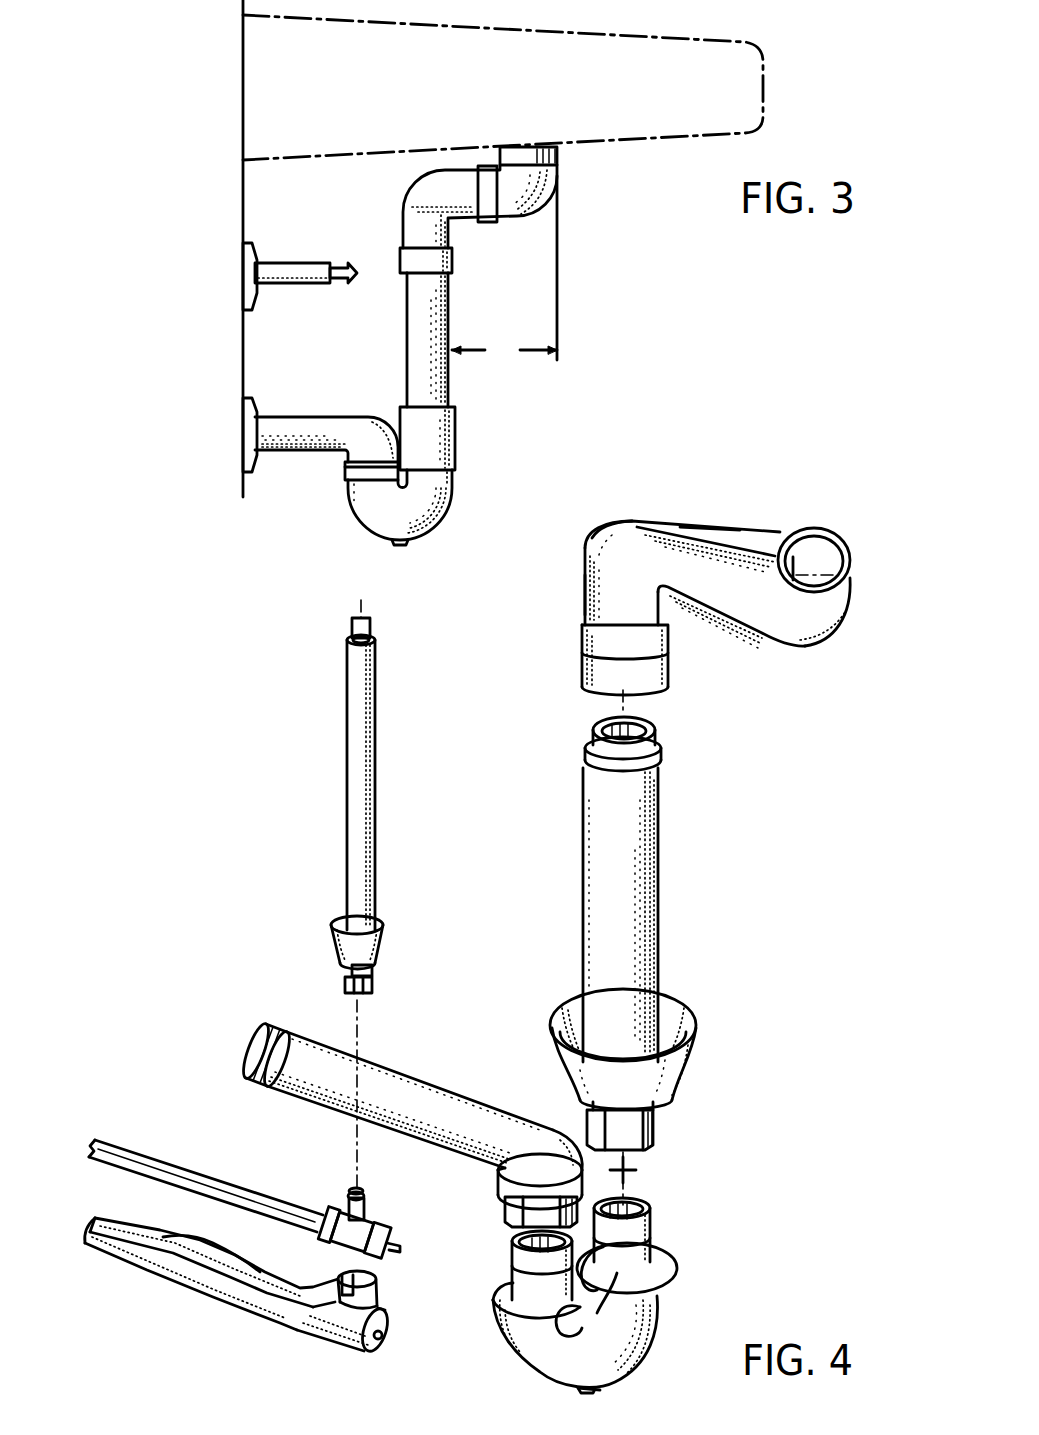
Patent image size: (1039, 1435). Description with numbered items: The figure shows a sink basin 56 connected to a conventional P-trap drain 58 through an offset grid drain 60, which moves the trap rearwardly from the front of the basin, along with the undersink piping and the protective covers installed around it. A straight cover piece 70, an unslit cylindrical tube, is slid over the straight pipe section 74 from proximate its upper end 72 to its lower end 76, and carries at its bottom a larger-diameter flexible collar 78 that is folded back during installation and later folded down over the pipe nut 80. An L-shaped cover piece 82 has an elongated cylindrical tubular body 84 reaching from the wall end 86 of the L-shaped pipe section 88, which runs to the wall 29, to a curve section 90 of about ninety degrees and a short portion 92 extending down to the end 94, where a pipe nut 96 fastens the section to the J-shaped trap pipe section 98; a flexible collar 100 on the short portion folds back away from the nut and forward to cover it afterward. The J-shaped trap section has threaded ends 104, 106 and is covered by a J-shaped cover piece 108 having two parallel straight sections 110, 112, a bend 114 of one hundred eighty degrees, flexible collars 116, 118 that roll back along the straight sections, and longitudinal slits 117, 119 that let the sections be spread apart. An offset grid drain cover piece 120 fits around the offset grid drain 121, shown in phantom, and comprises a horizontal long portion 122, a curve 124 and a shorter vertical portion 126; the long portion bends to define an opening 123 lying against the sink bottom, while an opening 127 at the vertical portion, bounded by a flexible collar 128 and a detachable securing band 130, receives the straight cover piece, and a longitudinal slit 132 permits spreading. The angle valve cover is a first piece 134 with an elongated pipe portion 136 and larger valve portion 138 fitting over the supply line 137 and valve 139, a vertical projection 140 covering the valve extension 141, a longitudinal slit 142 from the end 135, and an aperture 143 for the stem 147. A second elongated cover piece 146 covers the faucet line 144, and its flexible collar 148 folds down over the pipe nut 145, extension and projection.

In FIG. 3, the wall 29 is at (243, 194).
In FIG. 3, the basin 56 is at (535, 75).
In FIG. 3, the P-trap drain 58 is at (490, 290).
In FIG. 3, the offset grid drain 60 is at (559, 192).
In FIG. 3, the straight cover piece 70 is at (407, 345).
In FIG. 4, the straight cover piece 70 is at (594, 902).
In FIG. 4, the upper end of pipe 72 is at (657, 727).
In FIG. 4, the straight pipe section 74 is at (582, 731).
In FIG. 4, the lower end of pipe 76 is at (657, 1135).
In FIG. 3, the flexible collar 78 is at (455, 438).
In FIG. 4, the flexible collar 78 is at (690, 1030).
In FIG. 4, the pipe nut 80 is at (655, 1115).
In FIG. 3, the L-shaped cover piece 82 is at (330, 408).
In FIG. 4, the L-shaped cover piece 82 is at (414, 1150).
In FIG. 3, the elongated cylindrical tubular body 84 is at (284, 452).
In FIG. 4, the elongated cylindrical tubular body 84 is at (395, 1085).
In FIG. 4, the wall end 86 is at (240, 1050).
In FIG. 4, the L-shaped pipe section 88 is at (245, 1075).
In FIG. 4, the curve section 90 is at (535, 1140).
In FIG. 4, the short portion 92 is at (505, 1180).
In FIG. 4, the end of L-shaped pipe section 94 is at (510, 1217).
In FIG. 4, the pipe nut 96 is at (512, 1237).
In FIG. 4, the J-shaped trap pipe section 98 is at (662, 1236).
In FIG. 3, the flexible collar 100 is at (347, 470).
In FIG. 4, the flexible collar 100 is at (630, 1170).
In FIG. 4, the threaded end 104 is at (655, 1210).
In FIG. 4, the threaded end 106 is at (513, 1255).
In FIG. 3, the J-shaped cover piece 108 is at (385, 520).
In FIG. 4, the J-shaped cover piece 108 is at (555, 1368).
In FIG. 4, the straight section 110 is at (678, 1265).
In FIG. 4, the straight section 112 is at (513, 1275).
In FIG. 4, the bend 114 is at (620, 1380).
In FIG. 4, the flexible collar 116 is at (660, 1298).
In FIG. 4, the longitudinal slit 117 is at (612, 1313).
In FIG. 4, the flexible collar 118 is at (500, 1303).
In FIG. 4, the longitudinal slit 119 is at (533, 1340).
In FIG. 3, the offset grid drain cover piece 120 is at (403, 205).
In FIG. 4, the offset grid drain cover piece 120 is at (767, 650).
In FIG. 4, the offset grid drain 121 is at (834, 532).
In FIG. 4, the horizontal long portion 122 is at (697, 528).
In FIG. 4, the opening 123 is at (845, 592).
In FIG. 4, the curve 124 is at (597, 560).
In FIG. 4, the shorter vertical portion 126 is at (585, 592).
In FIG. 4, the opening 127 is at (590, 690).
In FIG. 3, the flexible collar 128 is at (403, 256).
In FIG. 4, the flexible collar 128 is at (583, 627).
In FIG. 4, the detachable securing band 130 is at (590, 660).
In FIG. 4, the longitudinal slit 132 is at (667, 525).
In FIG. 3, the first piece 134 is at (286, 284).
In FIG. 4, the first piece 134 is at (225, 1298).
In FIG. 4, the end 135 is at (95, 1222).
In FIG. 4, the elongated pipe portion 136 is at (177, 1276).
In FIG. 3, the supply line 137 is at (346, 283).
In FIG. 4, the supply line 137 is at (170, 1165).
In FIG. 4, the valve portion 138 is at (327, 1330).
In FIG. 4, the valve 139 is at (346, 1216).
In FIG. 4, the vertical projection 140 is at (378, 1293).
In FIG. 4, the vertical extension 141 is at (356, 1187).
In FIG. 4, the longitudinal slit 142 is at (197, 1245).
In FIG. 4, the aperture 143 is at (385, 1337).
In FIG. 4, the faucet line 144 is at (372, 970).
In FIG. 4, the pipe nut 145 is at (372, 990).
In FIG. 4, the second elongated cover piece 146 is at (373, 790).
In FIG. 4, the stem 147 is at (400, 1242).
In FIG. 4, the flexible collar 148 is at (337, 947).